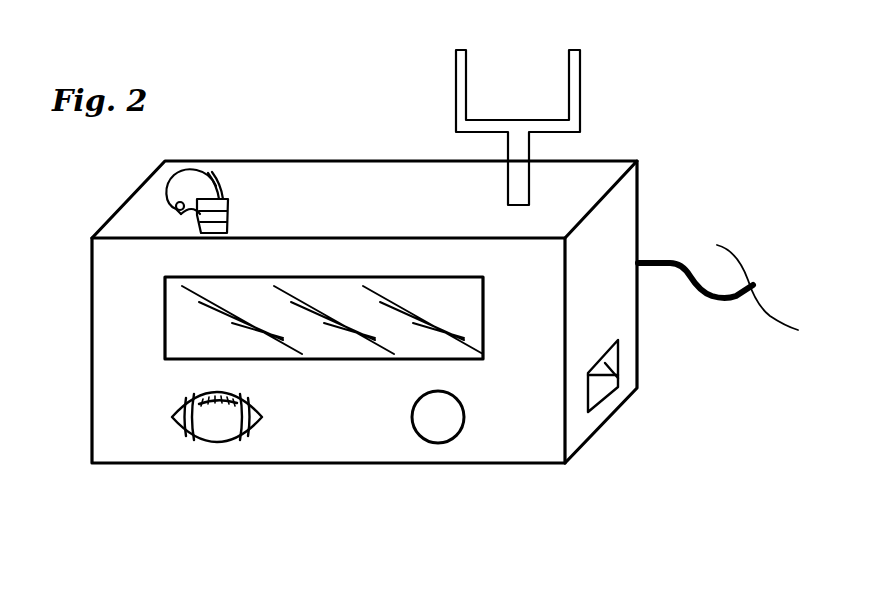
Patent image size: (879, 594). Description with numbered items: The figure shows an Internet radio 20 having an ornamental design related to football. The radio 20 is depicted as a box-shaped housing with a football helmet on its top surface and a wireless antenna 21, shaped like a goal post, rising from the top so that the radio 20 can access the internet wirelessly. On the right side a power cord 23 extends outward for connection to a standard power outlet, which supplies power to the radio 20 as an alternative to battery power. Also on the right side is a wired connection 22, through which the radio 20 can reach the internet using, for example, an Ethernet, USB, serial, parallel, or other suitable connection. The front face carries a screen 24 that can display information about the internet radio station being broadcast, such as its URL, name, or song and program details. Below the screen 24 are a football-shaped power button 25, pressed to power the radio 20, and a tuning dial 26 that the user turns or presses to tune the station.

The radio 20 is at (290, 175).
The wireless antenna 21 is at (582, 97).
The wired connection 22 is at (618, 378).
The power cord 23 is at (700, 292).
The screen 24 is at (183, 333).
The power button 25 is at (220, 422).
The tuning dial 26 is at (435, 427).